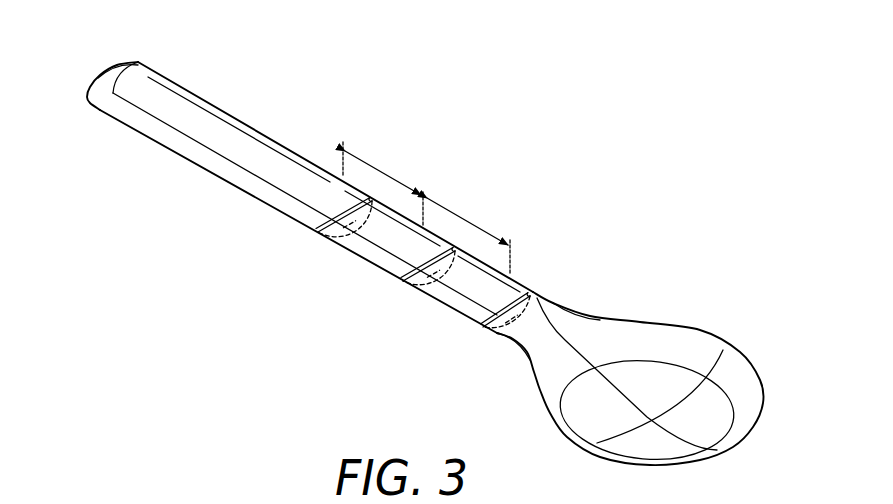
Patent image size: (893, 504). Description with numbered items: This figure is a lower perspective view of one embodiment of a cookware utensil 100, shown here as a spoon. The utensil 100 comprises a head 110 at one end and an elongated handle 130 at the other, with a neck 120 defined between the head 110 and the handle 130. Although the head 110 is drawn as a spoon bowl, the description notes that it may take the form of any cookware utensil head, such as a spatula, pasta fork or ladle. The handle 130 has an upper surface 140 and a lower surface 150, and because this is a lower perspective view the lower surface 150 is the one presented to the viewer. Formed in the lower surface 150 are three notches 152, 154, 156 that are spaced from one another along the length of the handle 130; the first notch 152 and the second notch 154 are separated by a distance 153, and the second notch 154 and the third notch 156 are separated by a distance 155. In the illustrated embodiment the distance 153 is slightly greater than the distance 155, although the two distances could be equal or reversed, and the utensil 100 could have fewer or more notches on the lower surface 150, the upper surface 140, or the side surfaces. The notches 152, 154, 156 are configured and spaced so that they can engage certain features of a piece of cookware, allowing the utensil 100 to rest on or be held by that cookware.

The cookware utensil 100 is at (577, 206).
The head 110 is at (705, 333).
The neck 120 is at (523, 362).
The handle 130 is at (186, 84).
The upper surface 140 is at (262, 132).
The lower surface 150 is at (155, 121).
The notch 152 is at (340, 233).
The distance 153 is at (385, 172).
The notch 154 is at (427, 278).
The distance 155 is at (466, 220).
The notch 156 is at (515, 340).